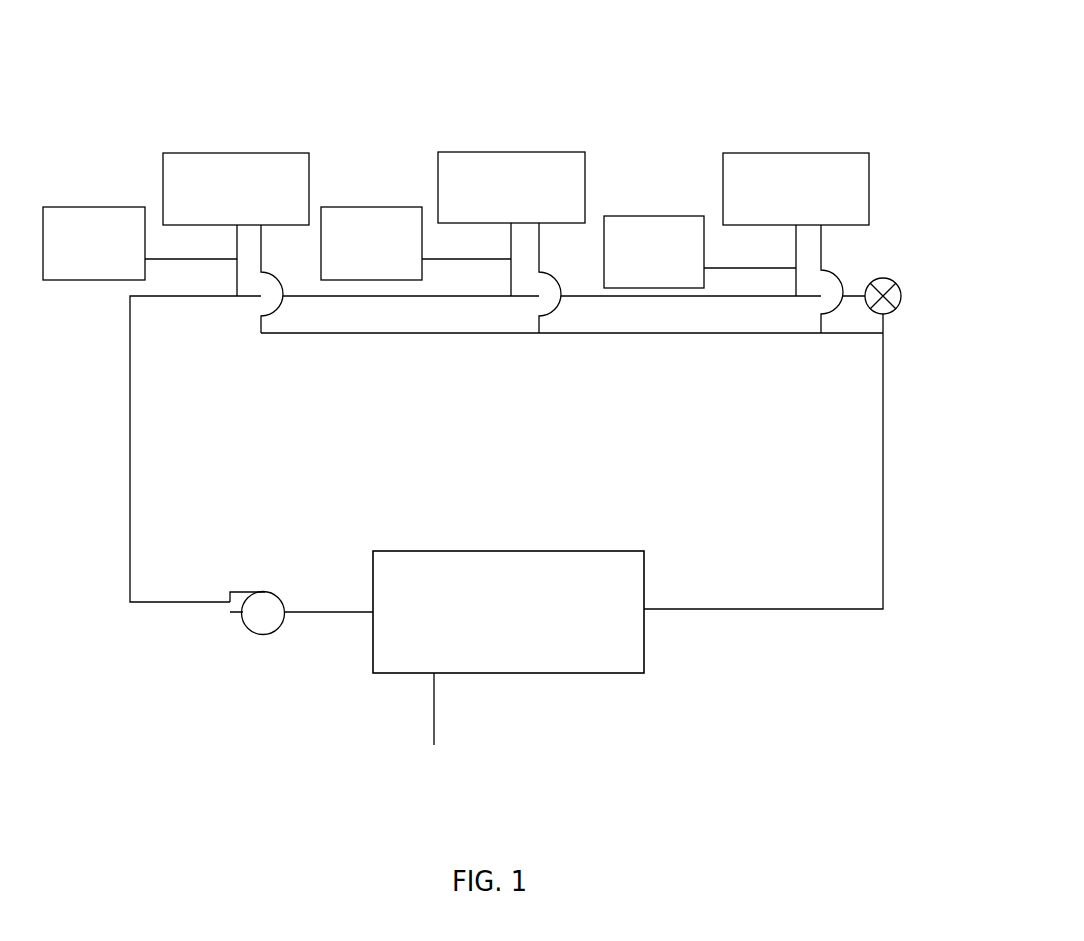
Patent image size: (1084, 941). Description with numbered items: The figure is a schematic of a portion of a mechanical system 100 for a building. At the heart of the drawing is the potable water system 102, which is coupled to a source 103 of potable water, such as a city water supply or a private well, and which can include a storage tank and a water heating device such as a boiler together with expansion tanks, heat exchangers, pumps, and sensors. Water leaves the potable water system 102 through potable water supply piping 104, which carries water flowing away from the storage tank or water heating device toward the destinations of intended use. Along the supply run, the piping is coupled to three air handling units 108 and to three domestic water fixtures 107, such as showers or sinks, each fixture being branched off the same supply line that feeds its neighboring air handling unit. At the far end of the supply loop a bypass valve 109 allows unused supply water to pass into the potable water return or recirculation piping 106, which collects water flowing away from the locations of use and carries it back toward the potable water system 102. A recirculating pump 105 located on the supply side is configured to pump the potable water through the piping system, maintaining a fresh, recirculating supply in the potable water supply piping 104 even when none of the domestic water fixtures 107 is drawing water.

The mechanical system 100 is at (626, 94).
The potable water system 102 is at (540, 675).
The source of potable water 103 is at (433, 710).
The potable water supply piping 104 is at (130, 403).
The recirculating pump 105 is at (263, 635).
The potable water return or recirculation piping 106 is at (833, 612).
The domestic water fixture 107 is at (88, 203).
The air handling unit 108 is at (223, 152).
The bypass valve 109 is at (888, 278).